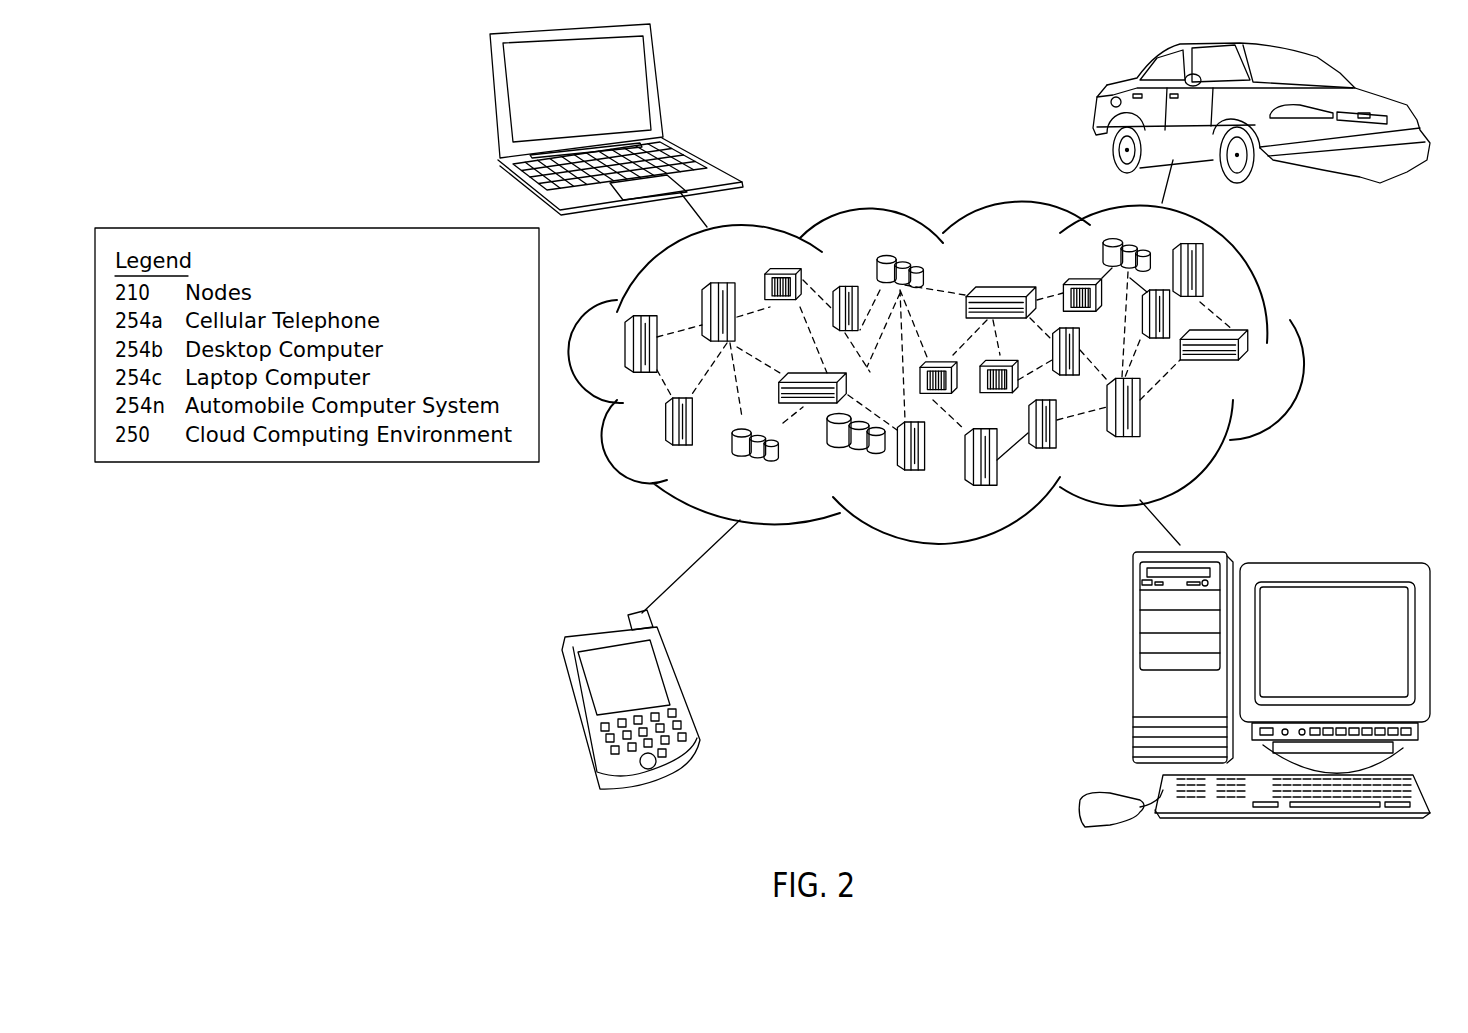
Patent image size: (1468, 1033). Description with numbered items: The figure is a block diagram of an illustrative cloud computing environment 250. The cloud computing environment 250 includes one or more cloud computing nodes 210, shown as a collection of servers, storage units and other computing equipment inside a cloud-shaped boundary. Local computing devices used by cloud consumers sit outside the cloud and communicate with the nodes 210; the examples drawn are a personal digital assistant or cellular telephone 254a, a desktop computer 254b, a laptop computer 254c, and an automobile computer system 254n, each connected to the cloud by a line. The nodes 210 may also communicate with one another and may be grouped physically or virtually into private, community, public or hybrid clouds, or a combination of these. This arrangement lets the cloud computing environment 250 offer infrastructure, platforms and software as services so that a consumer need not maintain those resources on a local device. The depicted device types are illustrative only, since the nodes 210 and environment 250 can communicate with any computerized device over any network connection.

The cloud computing nodes 210 is at (1270, 367).
The cloud computing environment 250 is at (1295, 287).
The cellular telephone 254a is at (682, 678).
The desktop computer 254b is at (1133, 673).
The laptop computer 254c is at (660, 83).
The automobile computer system 254n is at (1113, 95).